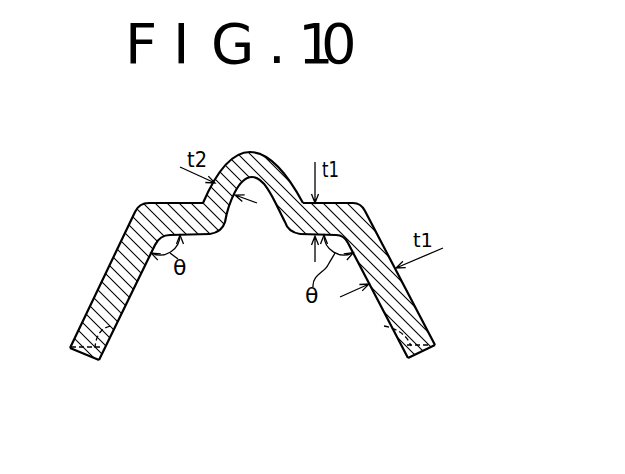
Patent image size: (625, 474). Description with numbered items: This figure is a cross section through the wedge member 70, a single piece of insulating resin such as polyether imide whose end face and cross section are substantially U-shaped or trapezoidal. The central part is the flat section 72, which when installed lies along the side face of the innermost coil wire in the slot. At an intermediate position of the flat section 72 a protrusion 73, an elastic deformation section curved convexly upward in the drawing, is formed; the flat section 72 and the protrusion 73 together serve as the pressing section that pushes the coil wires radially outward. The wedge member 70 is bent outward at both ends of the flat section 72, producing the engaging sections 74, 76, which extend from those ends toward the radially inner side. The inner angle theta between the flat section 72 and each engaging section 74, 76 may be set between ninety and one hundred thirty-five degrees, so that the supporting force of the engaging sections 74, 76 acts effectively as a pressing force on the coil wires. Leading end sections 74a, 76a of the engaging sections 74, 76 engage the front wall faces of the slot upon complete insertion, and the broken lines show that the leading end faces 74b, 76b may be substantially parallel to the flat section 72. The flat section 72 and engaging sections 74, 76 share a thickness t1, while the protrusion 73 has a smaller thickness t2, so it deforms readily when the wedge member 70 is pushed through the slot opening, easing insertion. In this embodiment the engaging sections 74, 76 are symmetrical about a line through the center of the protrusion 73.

The wedge member 70 is at (375, 182).
The flat section 72 is at (170, 203).
The protrusion (elastic deformation section) 73 is at (250, 151).
The engaging section 74 is at (99, 287).
The leading end section 74a is at (80, 360).
The leading end face 74b is at (110, 326).
The engaging section 76 is at (416, 306).
The leading end section 76a is at (420, 357).
The leading end face 76b is at (384, 326).